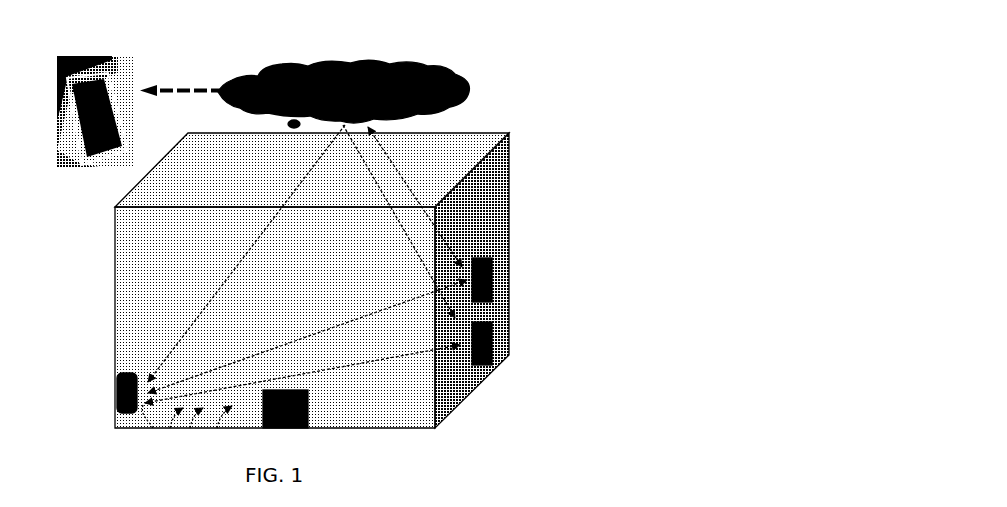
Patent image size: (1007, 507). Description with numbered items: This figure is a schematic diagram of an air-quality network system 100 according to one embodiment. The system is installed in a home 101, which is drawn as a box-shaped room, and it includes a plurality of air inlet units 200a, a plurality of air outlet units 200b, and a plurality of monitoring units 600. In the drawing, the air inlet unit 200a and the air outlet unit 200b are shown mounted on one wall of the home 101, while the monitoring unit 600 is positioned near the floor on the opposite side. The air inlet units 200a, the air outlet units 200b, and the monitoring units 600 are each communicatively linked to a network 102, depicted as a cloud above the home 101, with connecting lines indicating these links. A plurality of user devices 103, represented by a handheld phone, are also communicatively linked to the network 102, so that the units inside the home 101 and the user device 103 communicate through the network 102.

The air-quality network system 100 is at (772, 85).
The home 101 is at (509, 128).
The network 102 is at (449, 59).
The user device 103 is at (103, 42).
The air inlet unit 200a is at (512, 258).
The air outlet unit 200b is at (514, 341).
The monitoring unit 600 is at (112, 378).